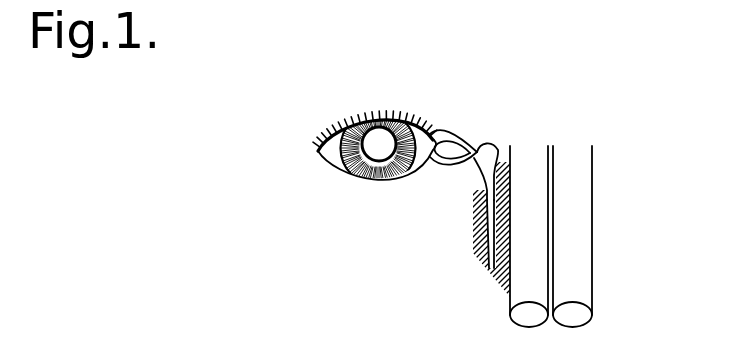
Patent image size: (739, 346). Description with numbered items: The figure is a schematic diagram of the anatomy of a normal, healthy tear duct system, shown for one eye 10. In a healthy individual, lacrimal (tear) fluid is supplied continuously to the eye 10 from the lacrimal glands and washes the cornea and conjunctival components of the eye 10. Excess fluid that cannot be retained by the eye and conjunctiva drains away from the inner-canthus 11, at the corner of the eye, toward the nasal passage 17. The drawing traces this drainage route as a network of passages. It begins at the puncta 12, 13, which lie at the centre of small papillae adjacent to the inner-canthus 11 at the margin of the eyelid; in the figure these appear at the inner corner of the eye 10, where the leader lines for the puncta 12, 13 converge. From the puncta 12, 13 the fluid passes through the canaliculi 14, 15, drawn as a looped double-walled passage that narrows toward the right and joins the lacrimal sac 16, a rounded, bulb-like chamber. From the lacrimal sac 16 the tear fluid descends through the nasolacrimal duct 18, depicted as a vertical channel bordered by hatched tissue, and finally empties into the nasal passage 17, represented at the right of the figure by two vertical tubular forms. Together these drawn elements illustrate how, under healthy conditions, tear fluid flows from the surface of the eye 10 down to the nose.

The eye 10 is at (312, 121).
The inner-canthus 11 is at (433, 162).
The punctum 12 is at (434, 130).
The punctum 13 is at (441, 168).
The canaliculus 14 is at (458, 135).
The canaliculus 15 is at (443, 168).
The lacrimal sac 16 is at (492, 142).
The nasal passage 17 is at (577, 283).
The nasolacrimal duct 18 is at (477, 252).